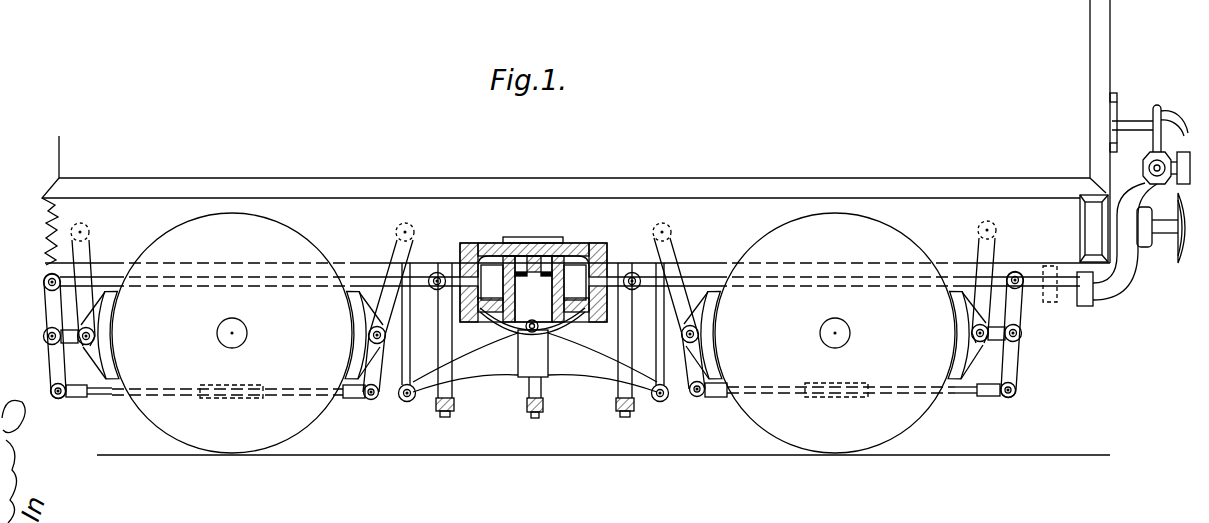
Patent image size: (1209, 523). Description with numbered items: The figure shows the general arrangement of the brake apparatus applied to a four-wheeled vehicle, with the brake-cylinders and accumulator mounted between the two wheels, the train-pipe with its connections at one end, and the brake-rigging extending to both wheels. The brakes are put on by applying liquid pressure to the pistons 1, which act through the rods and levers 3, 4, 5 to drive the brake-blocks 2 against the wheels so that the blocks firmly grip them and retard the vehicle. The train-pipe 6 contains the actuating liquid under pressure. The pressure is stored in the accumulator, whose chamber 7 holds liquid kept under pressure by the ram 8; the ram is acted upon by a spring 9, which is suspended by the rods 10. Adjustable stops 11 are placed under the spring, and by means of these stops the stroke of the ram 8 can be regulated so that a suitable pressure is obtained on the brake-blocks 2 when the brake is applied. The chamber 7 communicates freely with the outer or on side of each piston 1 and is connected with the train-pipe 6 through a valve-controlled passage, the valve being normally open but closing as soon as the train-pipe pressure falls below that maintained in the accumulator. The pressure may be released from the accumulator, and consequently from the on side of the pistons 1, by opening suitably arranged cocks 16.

The pistons 1 is at (533, 282).
The brake-blocks 2 is at (533, 335).
The levers 3 is at (533, 319).
The levers 4 is at (45, 306).
The rods 5 is at (100, 398).
The train-pipe 6 is at (1148, 166).
The chamber 7 is at (538, 258).
The ram 8 is at (533, 289).
The spring 9 is at (535, 361).
The rods 10 is at (534, 332).
The adjustable stops 11 is at (456, 404).
The cocks 16 is at (526, 328).